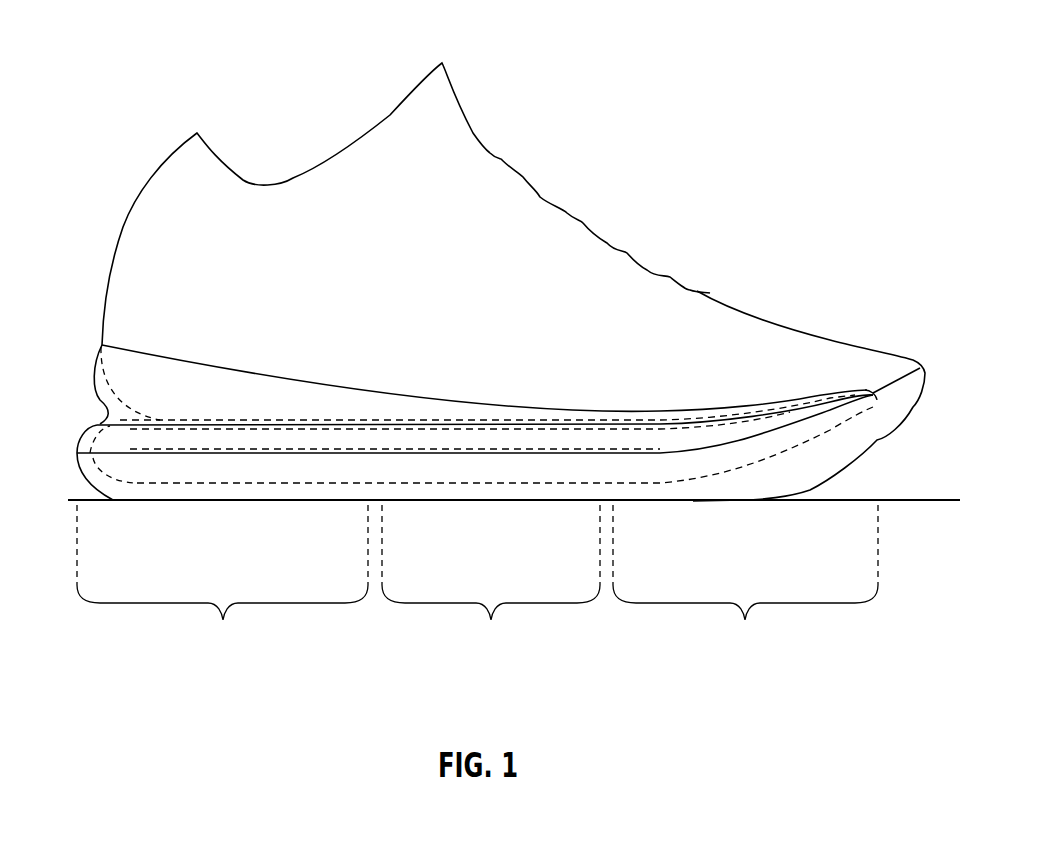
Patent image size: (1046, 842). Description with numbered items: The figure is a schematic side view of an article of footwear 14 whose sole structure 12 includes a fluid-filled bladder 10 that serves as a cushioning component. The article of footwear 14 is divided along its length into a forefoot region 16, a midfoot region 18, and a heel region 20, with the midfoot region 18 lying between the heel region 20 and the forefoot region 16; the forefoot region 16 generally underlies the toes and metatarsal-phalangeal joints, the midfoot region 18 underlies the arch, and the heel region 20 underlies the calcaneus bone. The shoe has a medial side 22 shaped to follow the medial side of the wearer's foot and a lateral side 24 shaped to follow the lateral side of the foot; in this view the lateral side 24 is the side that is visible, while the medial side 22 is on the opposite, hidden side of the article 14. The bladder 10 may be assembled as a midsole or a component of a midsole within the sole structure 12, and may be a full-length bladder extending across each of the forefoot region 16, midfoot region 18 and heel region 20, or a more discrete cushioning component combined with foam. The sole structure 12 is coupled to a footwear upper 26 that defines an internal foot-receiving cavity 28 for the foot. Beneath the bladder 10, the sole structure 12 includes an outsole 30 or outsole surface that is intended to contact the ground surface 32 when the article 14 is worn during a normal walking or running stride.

The fluid-filled bladder 10 is at (157, 443).
The sole structure 12 is at (86, 435).
The article of footwear 14 is at (619, 139).
The forefoot region 16 is at (745, 579).
The midfoot region 18 is at (491, 579).
The heel region 20 is at (222, 579).
The medial side 22 is at (700, 290).
The lateral side 24 is at (506, 379).
The footwear upper 26 is at (507, 227).
The internal foot-receiving cavity 28 is at (360, 255).
The outsole 30 is at (823, 462).
The ground surface 32 is at (907, 502).